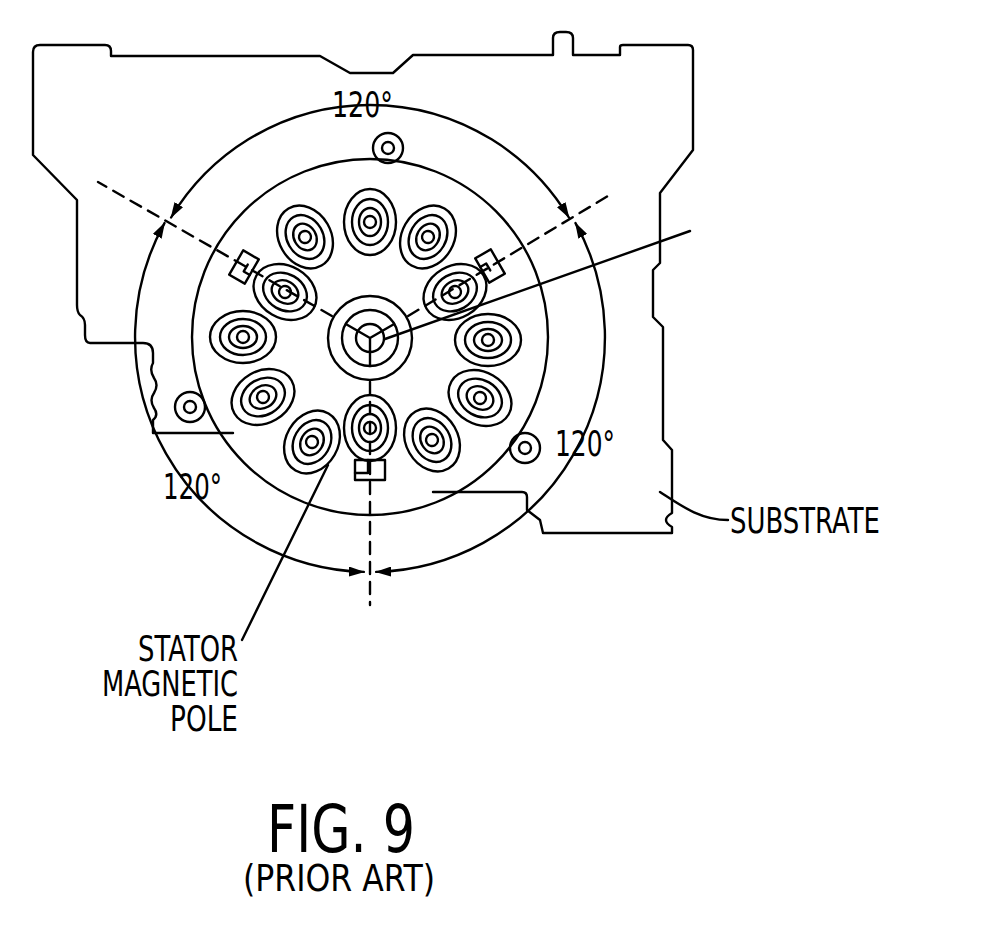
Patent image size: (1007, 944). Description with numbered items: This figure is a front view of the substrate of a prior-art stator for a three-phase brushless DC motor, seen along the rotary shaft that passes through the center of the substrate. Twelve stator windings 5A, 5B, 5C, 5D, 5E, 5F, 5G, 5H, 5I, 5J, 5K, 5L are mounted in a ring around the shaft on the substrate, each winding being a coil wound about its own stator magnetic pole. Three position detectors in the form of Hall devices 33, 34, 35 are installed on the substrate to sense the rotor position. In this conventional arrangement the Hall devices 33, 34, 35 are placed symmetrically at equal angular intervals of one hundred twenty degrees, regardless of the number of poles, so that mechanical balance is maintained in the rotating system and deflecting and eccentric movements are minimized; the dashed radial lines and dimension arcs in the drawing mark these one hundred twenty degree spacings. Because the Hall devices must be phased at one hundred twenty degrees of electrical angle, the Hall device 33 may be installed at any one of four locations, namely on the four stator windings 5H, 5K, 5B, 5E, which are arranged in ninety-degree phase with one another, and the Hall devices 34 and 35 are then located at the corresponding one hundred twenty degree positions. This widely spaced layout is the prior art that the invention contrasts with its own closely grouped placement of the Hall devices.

The stator winding 5A is at (521, 336).
The stator winding 5B is at (512, 398).
The stator winding 5C is at (452, 462).
The stator winding 5D is at (395, 448).
The stator winding 5E is at (304, 470).
The stator winding 5F is at (235, 400).
The stator winding 5G is at (212, 342).
The stator winding 5H is at (282, 266).
The stator winding 5I is at (296, 212).
The stator winding 5J is at (360, 200).
The stator winding 5K is at (434, 212).
The stator winding 5L is at (465, 262).
The Hall device 33 is at (496, 252).
The Hall device 34 is at (364, 484).
The Hall device 35 is at (243, 253).